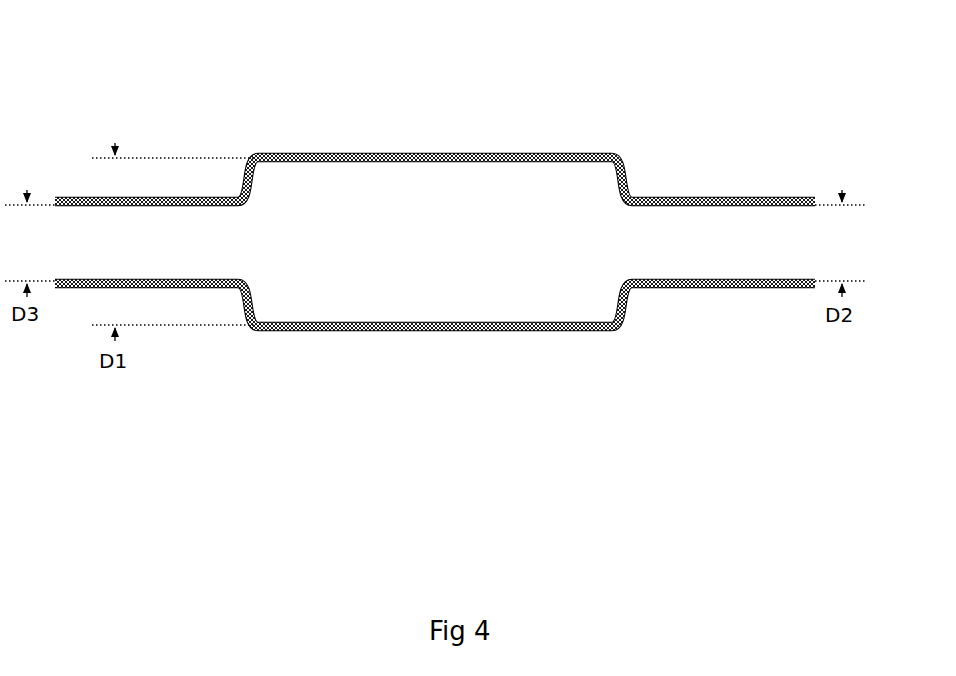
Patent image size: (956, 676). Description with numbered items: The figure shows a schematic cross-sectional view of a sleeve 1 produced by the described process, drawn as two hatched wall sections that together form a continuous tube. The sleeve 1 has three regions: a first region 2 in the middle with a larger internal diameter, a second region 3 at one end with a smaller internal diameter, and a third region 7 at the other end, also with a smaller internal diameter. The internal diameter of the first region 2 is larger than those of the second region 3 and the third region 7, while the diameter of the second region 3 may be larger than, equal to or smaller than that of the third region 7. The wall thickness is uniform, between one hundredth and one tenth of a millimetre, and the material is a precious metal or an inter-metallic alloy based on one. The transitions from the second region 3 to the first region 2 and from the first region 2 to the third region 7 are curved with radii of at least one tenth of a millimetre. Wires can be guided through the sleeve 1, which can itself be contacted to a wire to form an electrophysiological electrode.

The sleeve 1 is at (435, 289).
The first region 2 is at (292, 158).
The second region 3 is at (727, 199).
The third region 7 is at (112, 199).